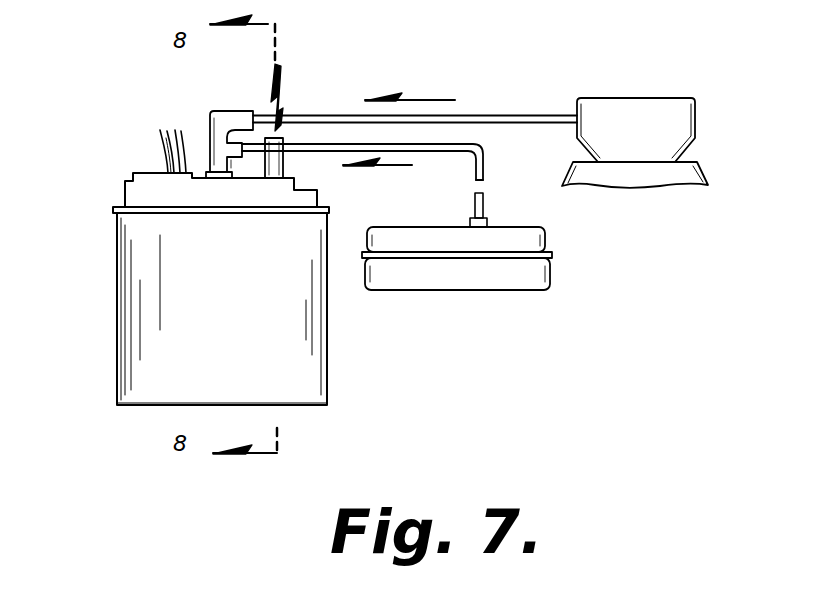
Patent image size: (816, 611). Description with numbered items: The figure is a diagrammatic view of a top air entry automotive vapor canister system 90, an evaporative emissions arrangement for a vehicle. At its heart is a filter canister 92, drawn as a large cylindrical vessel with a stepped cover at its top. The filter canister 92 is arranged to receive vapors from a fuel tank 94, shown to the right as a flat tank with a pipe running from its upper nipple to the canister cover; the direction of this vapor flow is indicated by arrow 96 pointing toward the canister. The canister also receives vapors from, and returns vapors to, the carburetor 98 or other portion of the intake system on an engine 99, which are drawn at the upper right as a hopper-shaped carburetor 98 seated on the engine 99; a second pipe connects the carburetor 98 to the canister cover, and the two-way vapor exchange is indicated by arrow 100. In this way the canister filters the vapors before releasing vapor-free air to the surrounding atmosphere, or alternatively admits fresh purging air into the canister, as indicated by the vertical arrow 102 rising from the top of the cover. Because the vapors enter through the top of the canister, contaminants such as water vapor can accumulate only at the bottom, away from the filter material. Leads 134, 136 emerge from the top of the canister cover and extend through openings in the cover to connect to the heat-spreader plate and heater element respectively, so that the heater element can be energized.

The top air entry automotive vapor canister system 90 is at (585, 77).
The filter canister 92 is at (130, 318).
The fuel tank 94 is at (500, 275).
The arrow 96 is at (392, 168).
The carburetor 98 is at (678, 127).
The engine 99 is at (692, 173).
The arrow 100 is at (406, 100).
The arrow 102 is at (279, 92).
The lead 134 is at (163, 154).
The lead 136 is at (171, 128).